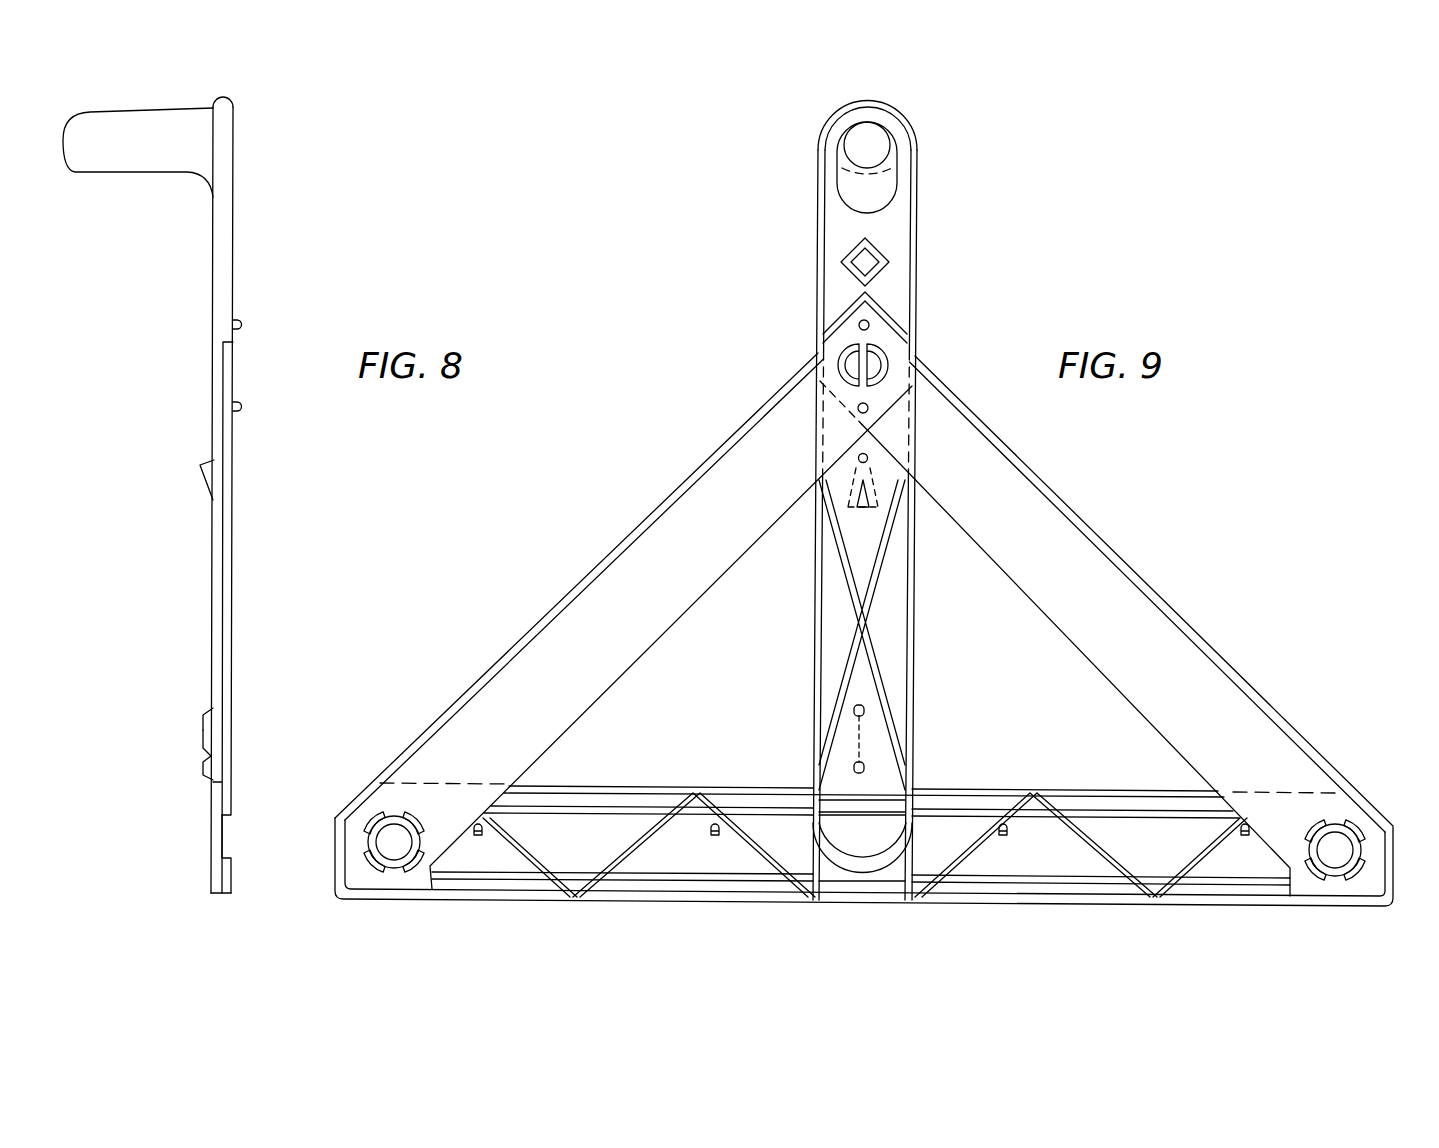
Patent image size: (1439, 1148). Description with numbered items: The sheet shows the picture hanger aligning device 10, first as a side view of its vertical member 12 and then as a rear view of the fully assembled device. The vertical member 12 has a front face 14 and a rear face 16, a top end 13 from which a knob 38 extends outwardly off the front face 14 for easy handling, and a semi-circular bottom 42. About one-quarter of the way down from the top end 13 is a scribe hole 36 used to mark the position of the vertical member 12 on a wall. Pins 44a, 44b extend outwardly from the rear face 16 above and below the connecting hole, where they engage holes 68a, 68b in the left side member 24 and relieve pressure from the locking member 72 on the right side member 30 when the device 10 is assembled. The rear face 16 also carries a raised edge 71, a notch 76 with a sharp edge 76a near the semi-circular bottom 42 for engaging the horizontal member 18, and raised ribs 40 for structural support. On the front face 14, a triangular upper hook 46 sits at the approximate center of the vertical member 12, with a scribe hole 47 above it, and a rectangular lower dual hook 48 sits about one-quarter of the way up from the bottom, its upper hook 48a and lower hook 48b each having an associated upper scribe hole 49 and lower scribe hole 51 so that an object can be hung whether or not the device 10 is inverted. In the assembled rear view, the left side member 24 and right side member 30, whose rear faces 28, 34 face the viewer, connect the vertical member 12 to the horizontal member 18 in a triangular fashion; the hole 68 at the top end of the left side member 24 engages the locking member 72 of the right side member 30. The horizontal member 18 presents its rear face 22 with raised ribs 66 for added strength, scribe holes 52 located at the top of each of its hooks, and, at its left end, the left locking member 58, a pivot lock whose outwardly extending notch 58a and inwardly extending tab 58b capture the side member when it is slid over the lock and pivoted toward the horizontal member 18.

In FIG. 9, the picture hanger aligning device 10 is at (931, 277).
In FIG. 8, the vertical member 12 is at (238, 79).
In FIG. 9, the vertical member 12 is at (917, 168).
In FIG. 9, the top end 13 is at (900, 126).
In FIG. 8, the front face 14 is at (213, 205).
In FIG. 8, the rear face 16 is at (236, 238).
In FIG. 9, the rear face 16 is at (898, 240).
In FIG. 9, the horizontal member 18 is at (1013, 898).
In FIG. 9, the rear face 22 is at (936, 855).
In FIG. 9, the left side member 24 is at (1084, 508).
In FIG. 9, the rear face 28 is at (1106, 575).
In FIG. 9, the right side member 30 is at (628, 534).
In FIG. 9, the rear face 34 is at (596, 586).
In FIG. 9, the scribe hole 36 is at (865, 262).
In FIG. 8, the knob 38 is at (88, 132).
In FIG. 9, the raised ribs 40 is at (882, 575).
In FIG. 8, the semi-circular bottom 42 is at (220, 894).
In FIG. 8, the pin 44a is at (241, 322).
In FIG. 9, the pin 44a is at (858, 325).
In FIG. 8, the pin 44b is at (241, 412).
In FIG. 9, the pin 44b is at (869, 408).
In FIG. 8, the triangular upper hook 46 is at (205, 478).
In FIG. 9, the scribe hole 47 is at (860, 455).
In FIG. 8, the rectangular lower dual hook 48 is at (202, 733).
In FIG. 8, the upper hook 48a is at (207, 710).
In FIG. 8, the lower hook 48b is at (207, 757).
In FIG. 9, the upper scribe hole 49 is at (852, 710).
In FIG. 9, the lower scribe hole 51 is at (852, 768).
In FIG. 9, the scribe holes 52 is at (1003, 832).
In FIG. 9, the left locking member 58 is at (1343, 855).
In FIG. 9, the outwardly extending notch 58a is at (1358, 836).
In FIG. 9, the inwardly extending tab 58b is at (1340, 818).
In FIG. 9, the raised ribs 66 is at (628, 852).
In FIG. 9, the hole 68 is at (395, 850).
In FIG. 9, the hole 68a is at (428, 806).
In FIG. 9, the hole 68b is at (388, 812).
In FIG. 9, the raised edge 71 is at (818, 160).
In FIG. 9, the locking member 72 is at (880, 365).
In FIG. 8, the notch 76 is at (230, 823).
In FIG. 8, the sharp edge 76a is at (250, 851).